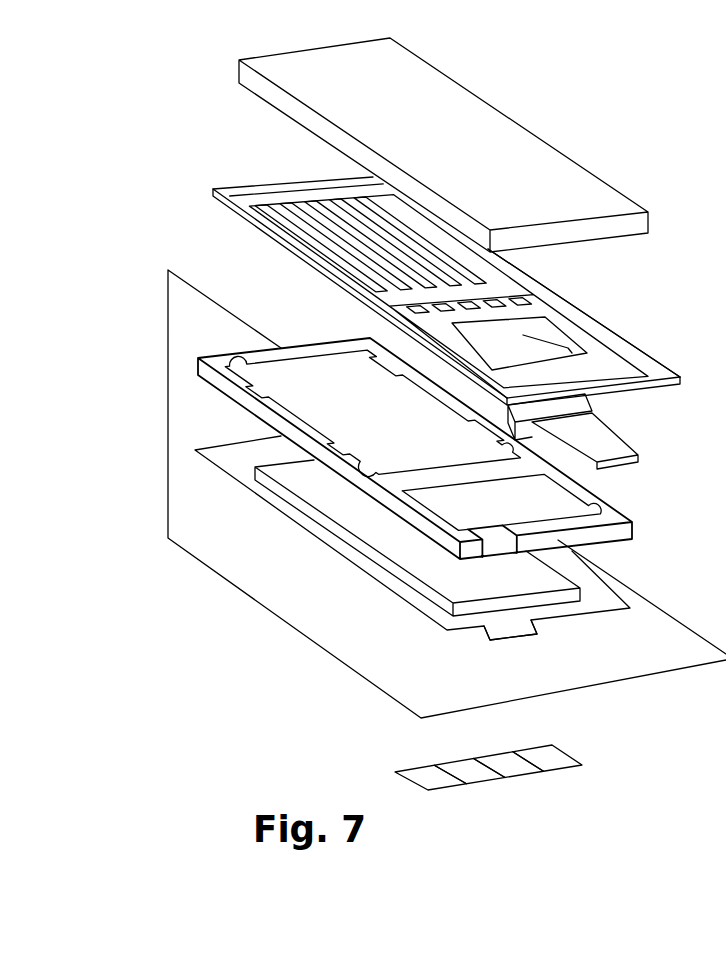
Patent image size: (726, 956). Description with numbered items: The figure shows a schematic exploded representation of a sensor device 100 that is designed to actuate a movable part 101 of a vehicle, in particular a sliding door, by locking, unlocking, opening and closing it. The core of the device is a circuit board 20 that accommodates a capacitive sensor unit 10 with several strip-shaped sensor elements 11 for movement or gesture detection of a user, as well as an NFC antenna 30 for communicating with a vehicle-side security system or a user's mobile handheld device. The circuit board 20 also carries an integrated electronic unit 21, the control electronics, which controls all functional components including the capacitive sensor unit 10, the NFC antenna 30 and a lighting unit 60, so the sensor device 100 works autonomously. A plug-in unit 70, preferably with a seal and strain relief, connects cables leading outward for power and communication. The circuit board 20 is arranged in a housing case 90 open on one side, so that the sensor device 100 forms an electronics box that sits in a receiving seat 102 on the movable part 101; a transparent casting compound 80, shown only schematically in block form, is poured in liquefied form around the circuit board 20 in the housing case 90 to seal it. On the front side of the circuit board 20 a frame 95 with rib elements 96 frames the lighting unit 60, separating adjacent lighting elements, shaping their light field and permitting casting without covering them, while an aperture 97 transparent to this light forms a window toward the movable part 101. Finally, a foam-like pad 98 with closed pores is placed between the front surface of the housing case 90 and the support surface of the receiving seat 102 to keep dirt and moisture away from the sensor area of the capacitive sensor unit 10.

The capacitive sensor unit 10 is at (300, 262).
The sensor elements 11 is at (216, 194).
The circuit board 20 is at (570, 328).
The electronic unit 21 is at (643, 381).
The NFC antenna 30 is at (628, 342).
The lighting unit 60 is at (398, 324).
The plug-in unit 70 is at (606, 412).
The casting compound 80 is at (572, 195).
The housing case 90 is at (612, 497).
The frame 95 is at (567, 755).
The rib element 96 is at (550, 767).
The aperture 97 is at (395, 545).
The pad 98 is at (300, 486).
The sensor device 100 is at (552, 285).
The movable part 101 is at (387, 666).
The receiving seat 102 is at (418, 598).